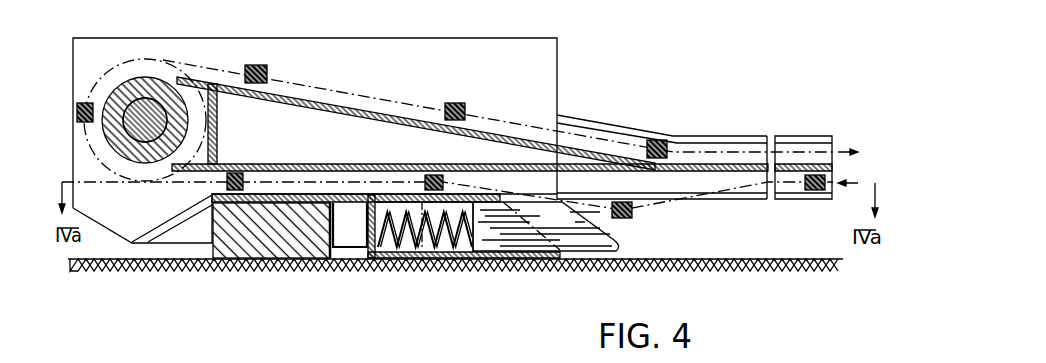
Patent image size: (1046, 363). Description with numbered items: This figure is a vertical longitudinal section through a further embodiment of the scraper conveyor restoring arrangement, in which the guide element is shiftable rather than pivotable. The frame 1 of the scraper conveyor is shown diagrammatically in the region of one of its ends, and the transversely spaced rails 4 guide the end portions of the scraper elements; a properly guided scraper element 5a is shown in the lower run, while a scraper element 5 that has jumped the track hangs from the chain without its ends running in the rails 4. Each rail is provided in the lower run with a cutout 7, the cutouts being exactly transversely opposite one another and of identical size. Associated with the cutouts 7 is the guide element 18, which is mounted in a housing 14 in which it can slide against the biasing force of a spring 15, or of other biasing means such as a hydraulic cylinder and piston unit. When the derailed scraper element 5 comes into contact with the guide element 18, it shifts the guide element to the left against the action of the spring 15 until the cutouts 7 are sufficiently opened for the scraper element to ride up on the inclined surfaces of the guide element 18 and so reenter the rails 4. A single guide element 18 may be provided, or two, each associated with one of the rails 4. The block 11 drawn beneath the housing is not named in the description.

The frame 1 is at (528, 66).
The rails 4 is at (708, 178).
The scraper element 5 is at (630, 218).
The scraper element 5a is at (810, 190).
The cutout 7 is at (520, 197).
The support block 11 is at (282, 232).
The housing 14 is at (460, 248).
The spring 15 is at (393, 243).
The guide element 18 is at (527, 243).